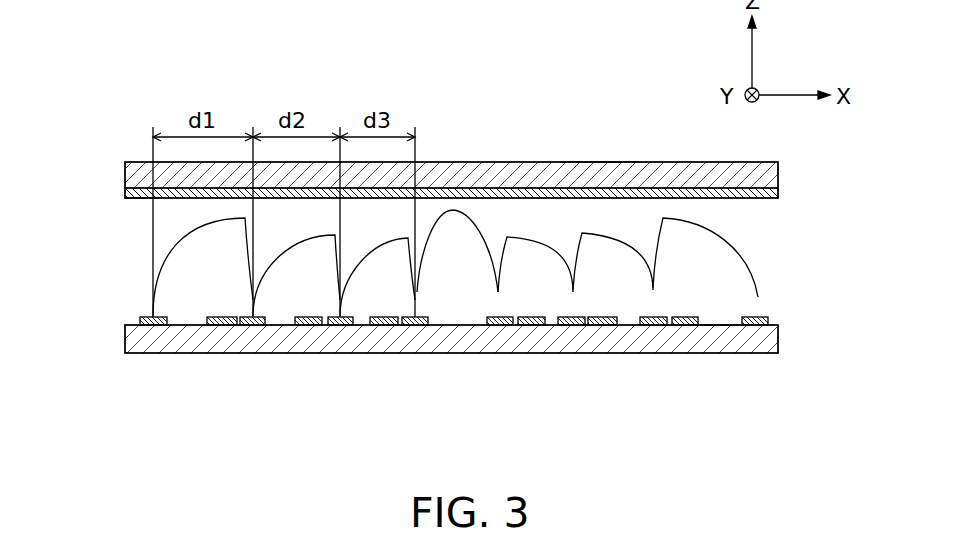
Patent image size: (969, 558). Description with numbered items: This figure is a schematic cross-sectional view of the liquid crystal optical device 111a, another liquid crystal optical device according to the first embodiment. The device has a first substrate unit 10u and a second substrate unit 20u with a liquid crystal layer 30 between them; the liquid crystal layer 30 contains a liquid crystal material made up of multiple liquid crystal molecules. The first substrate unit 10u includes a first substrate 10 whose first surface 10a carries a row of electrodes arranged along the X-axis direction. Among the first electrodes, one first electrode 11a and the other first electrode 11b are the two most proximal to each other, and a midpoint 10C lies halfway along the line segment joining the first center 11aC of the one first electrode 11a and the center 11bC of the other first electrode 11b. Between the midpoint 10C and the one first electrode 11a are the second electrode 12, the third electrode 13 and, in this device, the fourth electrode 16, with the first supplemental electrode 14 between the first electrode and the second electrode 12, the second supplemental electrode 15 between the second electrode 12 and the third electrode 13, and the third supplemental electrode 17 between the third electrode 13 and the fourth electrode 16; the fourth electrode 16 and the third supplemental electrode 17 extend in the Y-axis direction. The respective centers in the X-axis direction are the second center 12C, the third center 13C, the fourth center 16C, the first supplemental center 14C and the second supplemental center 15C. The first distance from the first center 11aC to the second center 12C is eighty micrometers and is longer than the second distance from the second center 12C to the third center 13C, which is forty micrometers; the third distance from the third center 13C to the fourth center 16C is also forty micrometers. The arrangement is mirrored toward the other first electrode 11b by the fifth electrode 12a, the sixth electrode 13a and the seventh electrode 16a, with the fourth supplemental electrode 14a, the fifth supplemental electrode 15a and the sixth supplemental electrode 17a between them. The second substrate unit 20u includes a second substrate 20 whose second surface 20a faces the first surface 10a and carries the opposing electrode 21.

The first substrate 10 is at (778, 341).
The first substrate unit 10u is at (834, 297).
The first surface 10a is at (717, 326).
The midpoint 10C is at (457, 325).
The one first electrode 11a is at (160, 326).
The first center 11aC is at (154, 326).
The other first electrode 11b is at (768, 321).
The center of the other first electrode 11bC is at (757, 326).
The second electrode 12 is at (262, 326).
The second center 12C is at (243, 316).
The fifth electrode 12a is at (652, 326).
The third electrode 13 is at (347, 326).
The third center 13C is at (343, 316).
The sixth electrode 13a is at (570, 326).
The first supplemental electrode 14 is at (227, 326).
The first supplemental center 14C is at (226, 318).
The fourth supplemental electrode 14a is at (680, 326).
The second supplemental electrode 15 is at (315, 326).
The second supplemental center 15C is at (306, 316).
The fifth supplemental electrode 15a is at (597, 326).
The fourth electrode 16 is at (412, 326).
The fourth center 16C is at (412, 316).
The seventh electrode 16a is at (502, 326).
The third supplemental electrode 17 is at (383, 326).
The sixth supplemental electrode 17a is at (533, 326).
The second substrate 20 is at (778, 172).
The second surface 20a is at (138, 200).
The second substrate unit 20u is at (834, 163).
The opposing electrode 21 is at (778, 193).
The liquid crystal layer 30 is at (767, 253).
The liquid crystal optical device 111a is at (598, 155).